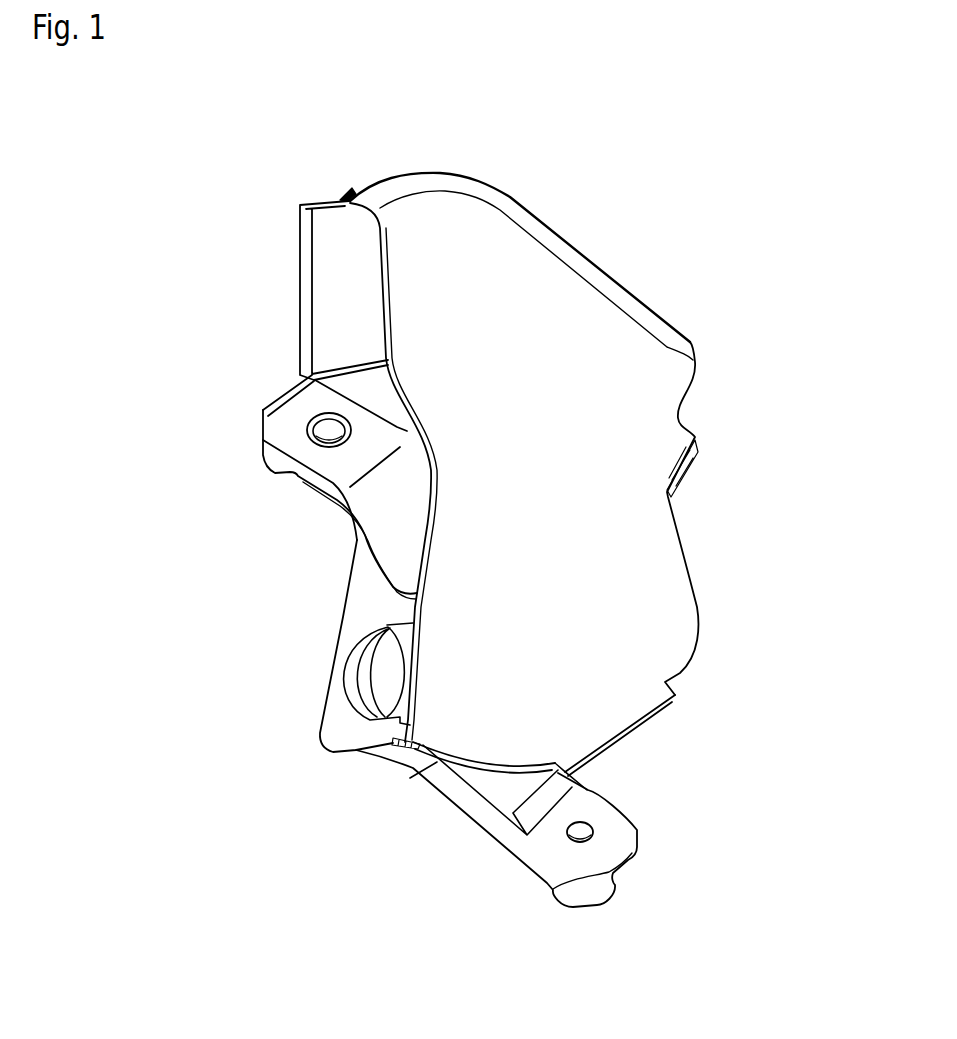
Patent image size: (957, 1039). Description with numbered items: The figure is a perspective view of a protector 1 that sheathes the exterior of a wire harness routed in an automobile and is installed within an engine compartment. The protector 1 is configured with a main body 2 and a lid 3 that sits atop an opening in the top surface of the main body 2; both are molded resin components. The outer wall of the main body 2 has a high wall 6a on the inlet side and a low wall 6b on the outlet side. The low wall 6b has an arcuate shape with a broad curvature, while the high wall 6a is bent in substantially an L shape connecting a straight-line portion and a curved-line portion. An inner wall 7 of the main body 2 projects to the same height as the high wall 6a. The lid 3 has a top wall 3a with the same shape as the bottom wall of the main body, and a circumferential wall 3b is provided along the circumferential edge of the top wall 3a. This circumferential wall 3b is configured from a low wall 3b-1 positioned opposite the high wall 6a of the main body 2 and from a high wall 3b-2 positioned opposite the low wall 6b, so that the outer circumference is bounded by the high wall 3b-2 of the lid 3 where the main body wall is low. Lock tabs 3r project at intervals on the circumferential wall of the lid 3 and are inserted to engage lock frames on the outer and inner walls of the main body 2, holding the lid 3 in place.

The protector 1 is at (186, 278).
The main body 2 is at (297, 332).
The lid 3 is at (682, 538).
The top wall 3a is at (593, 427).
The circumferential wall 3b is at (588, 268).
The low wall 3b-1 is at (473, 765).
The high wall 3b-2 is at (473, 190).
The lock tabs 3r is at (343, 197).
The high wall 6a is at (346, 756).
The low wall 6b is at (345, 200).
The inner wall 7 is at (400, 425).